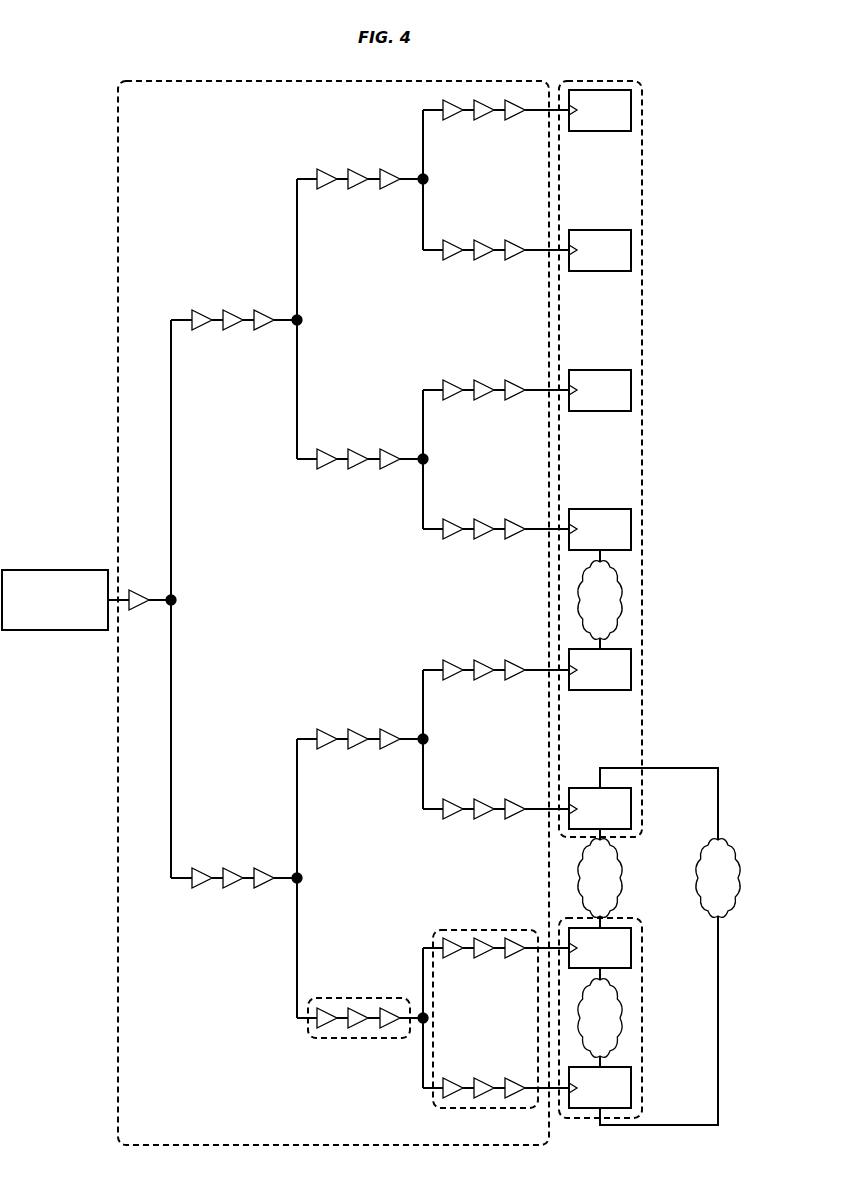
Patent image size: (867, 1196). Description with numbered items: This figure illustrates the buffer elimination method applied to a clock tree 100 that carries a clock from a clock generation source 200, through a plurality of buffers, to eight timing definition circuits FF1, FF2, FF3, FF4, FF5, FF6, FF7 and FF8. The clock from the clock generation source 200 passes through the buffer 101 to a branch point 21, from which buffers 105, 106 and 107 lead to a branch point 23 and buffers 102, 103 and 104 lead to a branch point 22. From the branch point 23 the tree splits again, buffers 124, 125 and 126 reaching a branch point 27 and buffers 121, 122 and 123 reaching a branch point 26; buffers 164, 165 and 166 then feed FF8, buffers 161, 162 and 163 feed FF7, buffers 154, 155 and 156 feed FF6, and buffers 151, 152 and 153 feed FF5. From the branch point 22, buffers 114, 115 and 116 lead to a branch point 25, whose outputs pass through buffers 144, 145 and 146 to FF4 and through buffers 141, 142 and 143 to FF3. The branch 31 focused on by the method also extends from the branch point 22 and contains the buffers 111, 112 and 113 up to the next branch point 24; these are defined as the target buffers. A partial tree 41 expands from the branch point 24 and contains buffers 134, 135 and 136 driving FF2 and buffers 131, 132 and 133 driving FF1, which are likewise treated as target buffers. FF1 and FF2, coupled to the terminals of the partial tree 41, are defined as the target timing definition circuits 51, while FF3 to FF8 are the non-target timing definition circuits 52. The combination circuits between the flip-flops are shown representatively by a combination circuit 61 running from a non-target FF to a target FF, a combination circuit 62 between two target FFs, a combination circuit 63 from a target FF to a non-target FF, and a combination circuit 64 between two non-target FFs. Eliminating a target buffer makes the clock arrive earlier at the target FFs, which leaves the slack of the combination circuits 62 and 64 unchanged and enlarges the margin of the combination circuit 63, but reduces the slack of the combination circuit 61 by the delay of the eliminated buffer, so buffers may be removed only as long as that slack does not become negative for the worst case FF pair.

The clock tree 100 is at (118, 1118).
The clock generation source 200 is at (60, 631).
The buffer 101 is at (136, 611).
The buffer 102 is at (200, 889).
The buffer 103 is at (231, 889).
The buffer 104 is at (262, 889).
The buffer 105 is at (200, 331).
The buffer 106 is at (231, 331).
The buffer 107 is at (262, 331).
The buffer 111 is at (325, 1029).
The buffer 112 is at (356, 1029).
The buffer 113 is at (388, 1029).
The buffer 114 is at (325, 750).
The buffer 115 is at (356, 750).
The buffer 116 is at (388, 750).
The buffer 121 is at (325, 470).
The buffer 122 is at (356, 470).
The buffer 123 is at (388, 470).
The buffer 124 is at (325, 190).
The buffer 125 is at (356, 190).
The buffer 126 is at (388, 190).
The buffer 131 is at (451, 1099).
The buffer 132 is at (482, 1099).
The buffer 133 is at (513, 1099).
The buffer 134 is at (451, 959).
The buffer 135 is at (482, 959).
The buffer 136 is at (513, 959).
The buffer 141 is at (451, 820).
The buffer 142 is at (482, 820).
The buffer 143 is at (513, 820).
The buffer 144 is at (451, 681).
The buffer 145 is at (482, 681).
The buffer 146 is at (513, 681).
The buffer 151 is at (451, 540).
The buffer 152 is at (482, 540).
The buffer 153 is at (513, 540).
The buffer 154 is at (451, 401).
The buffer 155 is at (482, 401).
The buffer 156 is at (513, 401).
The buffer 161 is at (451, 261).
The buffer 162 is at (482, 261).
The buffer 163 is at (513, 261).
The buffer 164 is at (451, 121).
The buffer 165 is at (482, 121).
The buffer 166 is at (513, 121).
The clock tree branch node 21 is at (176, 600).
The branch point 22 is at (302, 878).
The clock tree branch node 23 is at (302, 320).
The branch point 24 is at (427, 1021).
The clock tree branch node 25 is at (427, 742).
The clock tree branch node 26 is at (427, 462).
The clock tree branch node 27 is at (427, 182).
The branch 31 is at (352, 997).
The partial tree 41 is at (437, 932).
The target timing definition circuits 51 is at (642, 1045).
The non-target timing definition circuits 52 is at (642, 712).
The combination circuit 61 is at (621, 875).
The combination circuit 62 is at (621, 1015).
The combination circuit 63 is at (739, 875).
The combination circuit 64 is at (621, 597).
The timing definition circuit FF1 is at (631, 1088).
The timing definition circuit FF2 is at (631, 948).
The timing definition circuit FF3 is at (631, 809).
The timing definition circuit FF4 is at (631, 670).
The timing definition circuit FF5 is at (631, 529).
The timing definition circuit FF6 is at (631, 390).
The timing definition circuit FF7 is at (631, 250).
The timing definition circuit FF8 is at (631, 110).